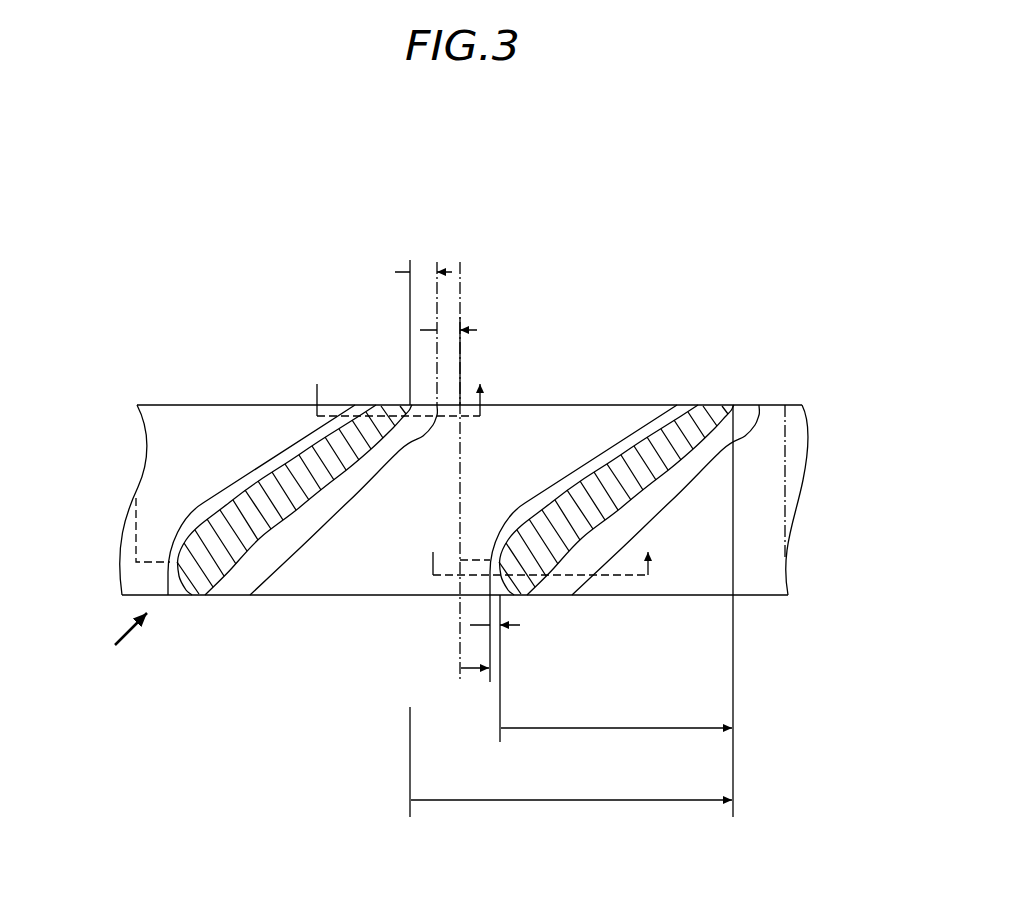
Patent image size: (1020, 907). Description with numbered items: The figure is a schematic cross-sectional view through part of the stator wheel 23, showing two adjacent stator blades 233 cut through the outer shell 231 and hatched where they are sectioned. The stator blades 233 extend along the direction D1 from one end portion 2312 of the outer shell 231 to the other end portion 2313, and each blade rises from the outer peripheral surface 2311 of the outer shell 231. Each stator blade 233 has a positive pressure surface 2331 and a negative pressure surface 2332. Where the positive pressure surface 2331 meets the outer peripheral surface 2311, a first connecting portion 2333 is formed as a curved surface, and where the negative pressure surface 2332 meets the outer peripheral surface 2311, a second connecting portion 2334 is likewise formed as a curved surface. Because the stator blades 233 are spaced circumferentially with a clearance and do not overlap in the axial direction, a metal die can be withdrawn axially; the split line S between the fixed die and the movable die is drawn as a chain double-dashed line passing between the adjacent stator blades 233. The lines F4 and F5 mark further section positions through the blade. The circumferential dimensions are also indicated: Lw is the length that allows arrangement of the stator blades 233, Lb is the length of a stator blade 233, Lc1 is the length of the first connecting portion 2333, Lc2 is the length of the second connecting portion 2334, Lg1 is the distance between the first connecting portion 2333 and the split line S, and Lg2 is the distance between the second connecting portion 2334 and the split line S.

The stator wheel 23 is at (456, 507).
The outer shell 231 is at (757, 588).
The outer peripheral surface 2311 is at (150, 450).
The one end portion 2312 is at (788, 597).
The other end portion 2313 is at (658, 403).
The stator blade 233 is at (452, 493).
The positive pressure surface 2331 is at (317, 492).
The negative pressure surface 2332 is at (257, 467).
The first connecting portion 2333 is at (270, 555).
The second connecting portion 2334 is at (223, 500).
The split line S is at (132, 522).
The direction D1 is at (132, 633).
The line F4- F4 is at (399, 384).
The line F5- F5 is at (542, 548).
The length of first connecting portion Lc1 is at (423, 271).
The distance between first connecting portion and split line Lg1 is at (450, 330).
The length of second connecting portion Lc2 is at (497, 630).
The distance between second connecting portion and split line Lg2 is at (472, 670).
The length of stator blade Lb is at (607, 730).
The length allowing arrangement of stator blades Lw is at (567, 802).